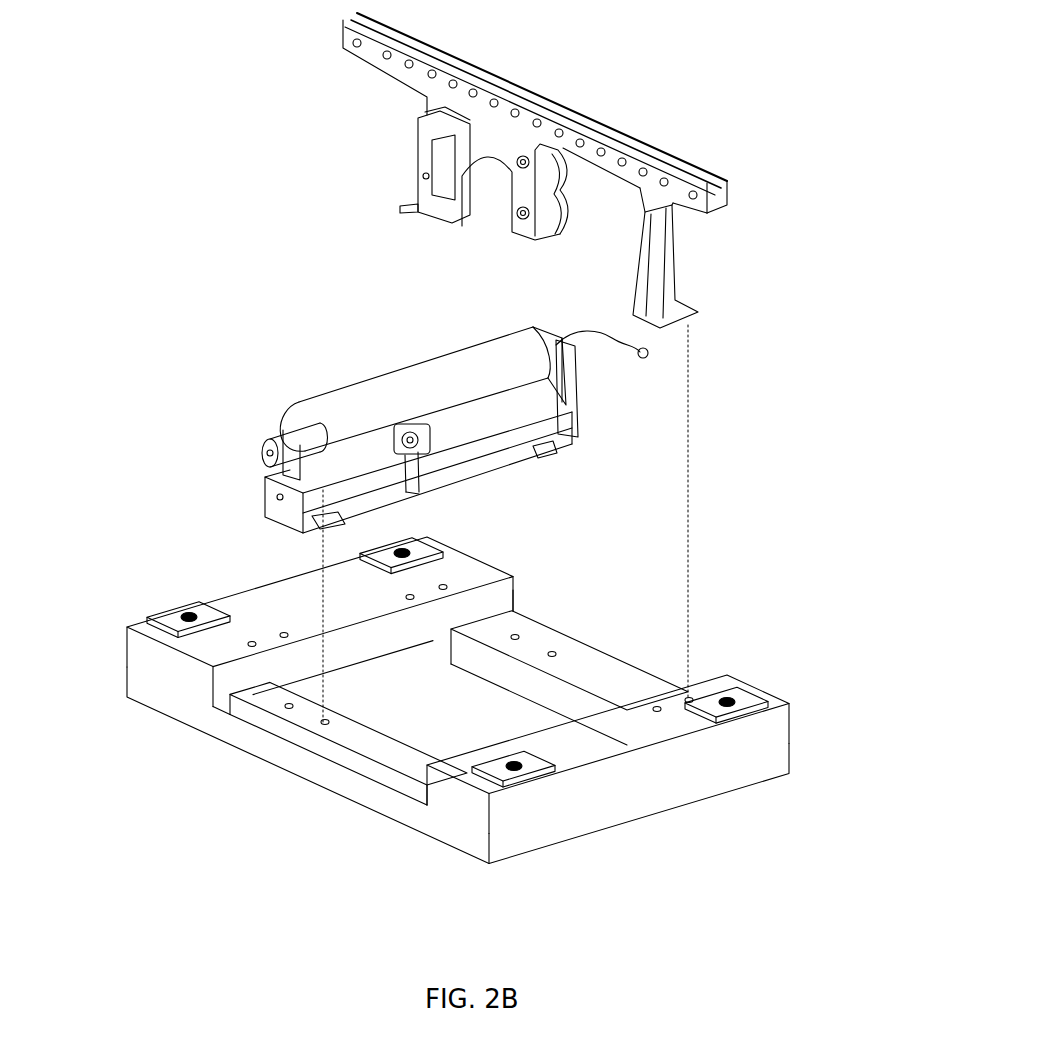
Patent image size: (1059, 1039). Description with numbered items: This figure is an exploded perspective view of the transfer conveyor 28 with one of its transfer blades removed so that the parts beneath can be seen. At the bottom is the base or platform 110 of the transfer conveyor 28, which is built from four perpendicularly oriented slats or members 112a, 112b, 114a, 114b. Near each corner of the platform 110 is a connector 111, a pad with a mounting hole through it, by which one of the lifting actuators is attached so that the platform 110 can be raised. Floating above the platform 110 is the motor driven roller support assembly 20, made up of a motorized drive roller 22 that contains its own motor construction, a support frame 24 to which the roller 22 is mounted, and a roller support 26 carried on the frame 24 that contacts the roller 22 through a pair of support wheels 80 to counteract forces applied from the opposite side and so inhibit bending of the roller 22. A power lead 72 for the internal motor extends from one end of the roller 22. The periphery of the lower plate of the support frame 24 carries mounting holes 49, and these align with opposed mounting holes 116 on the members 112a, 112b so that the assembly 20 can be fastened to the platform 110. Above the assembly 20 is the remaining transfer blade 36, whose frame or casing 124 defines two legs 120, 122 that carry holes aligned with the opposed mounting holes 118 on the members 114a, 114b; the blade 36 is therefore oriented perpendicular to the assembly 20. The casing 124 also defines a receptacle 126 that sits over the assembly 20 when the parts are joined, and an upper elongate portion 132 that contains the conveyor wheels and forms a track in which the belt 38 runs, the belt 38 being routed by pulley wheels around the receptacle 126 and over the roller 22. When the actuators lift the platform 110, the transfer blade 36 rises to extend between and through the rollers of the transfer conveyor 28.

The motor driven roller support assembly 20 is at (365, 331).
The motorized drive roller 22 is at (465, 322).
The support frame 24 is at (570, 462).
The roller support 26 is at (445, 453).
The transfer conveyor 28 is at (673, 56).
The transfer blades 36 is at (677, 162).
The belt 38 is at (612, 128).
The mounting holes 49 is at (543, 455).
The power lead 72 is at (597, 343).
The support wheels 80 is at (420, 443).
The platform 110 is at (790, 742).
The connectors 111 is at (423, 554).
The member 112a is at (382, 755).
The member 112b is at (538, 692).
The member 114a is at (620, 737).
The member 114b is at (257, 618).
The mounting holes 116 is at (325, 722).
The mounting holes 118 is at (252, 644).
The leg 120 is at (663, 268).
The leg 122 is at (417, 173).
The casing 124 is at (397, 65).
The receptacle 126 is at (488, 205).
The upper elongate portion 132 is at (703, 183).